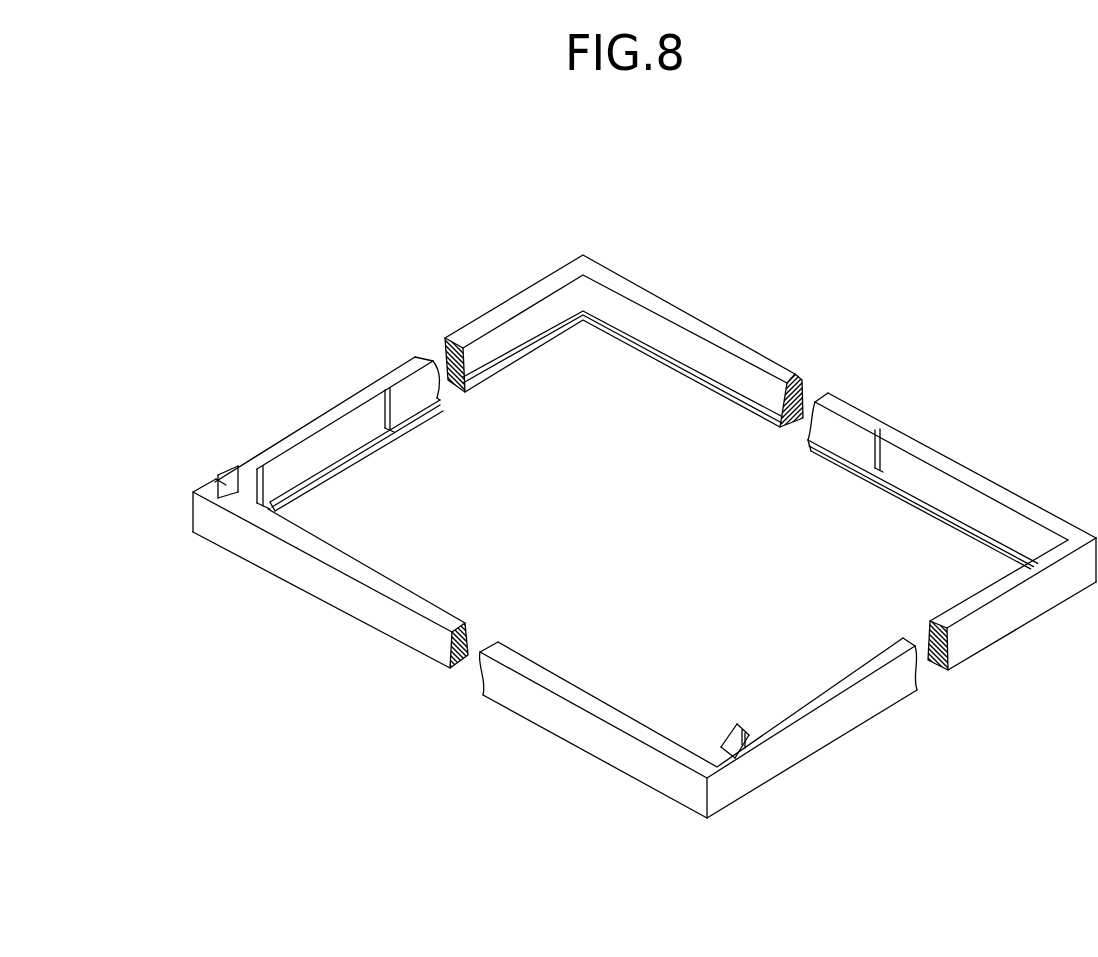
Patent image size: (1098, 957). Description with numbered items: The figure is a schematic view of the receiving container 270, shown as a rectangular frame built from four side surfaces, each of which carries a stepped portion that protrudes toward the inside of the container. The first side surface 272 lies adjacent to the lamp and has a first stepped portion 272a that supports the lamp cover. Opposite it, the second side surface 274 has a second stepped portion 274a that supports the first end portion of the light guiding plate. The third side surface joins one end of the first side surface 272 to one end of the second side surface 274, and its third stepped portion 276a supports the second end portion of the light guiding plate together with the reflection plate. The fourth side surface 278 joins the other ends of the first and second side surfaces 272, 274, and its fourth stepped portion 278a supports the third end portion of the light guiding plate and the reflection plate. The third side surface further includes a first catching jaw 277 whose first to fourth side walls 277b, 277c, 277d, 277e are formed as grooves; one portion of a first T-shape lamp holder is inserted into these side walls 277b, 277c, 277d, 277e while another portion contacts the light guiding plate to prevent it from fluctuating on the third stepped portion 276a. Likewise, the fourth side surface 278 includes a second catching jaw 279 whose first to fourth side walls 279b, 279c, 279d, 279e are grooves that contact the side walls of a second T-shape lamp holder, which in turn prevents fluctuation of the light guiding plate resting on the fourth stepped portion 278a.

The receiving container 270 is at (599, 216).
The first side surface 272 is at (315, 620).
The first stepped portion 272a is at (474, 637).
The second side surface 274 is at (718, 312).
The second stepped portion 274a is at (668, 370).
The third stepped portion 276a is at (921, 645).
The first catching jaw 277 is at (805, 603).
The first side wall of first catching jaw 277b is at (748, 737).
The second side wall of first catching jaw 277c is at (737, 737).
The third side wall of first catching jaw 277d is at (730, 747).
The fourth side wall of first catching jaw 277e is at (733, 755).
The fourth side surface 278 is at (378, 362).
The fourth stepped portion 278a is at (363, 457).
The second catching jaw 279 is at (305, 343).
The first side wall of second catching jaw 279b is at (265, 471).
The second side wall of second catching jaw 279c is at (248, 473).
The third side wall of second catching jaw 279d is at (235, 482).
The fourth side wall of second catching jaw 279e is at (228, 481).